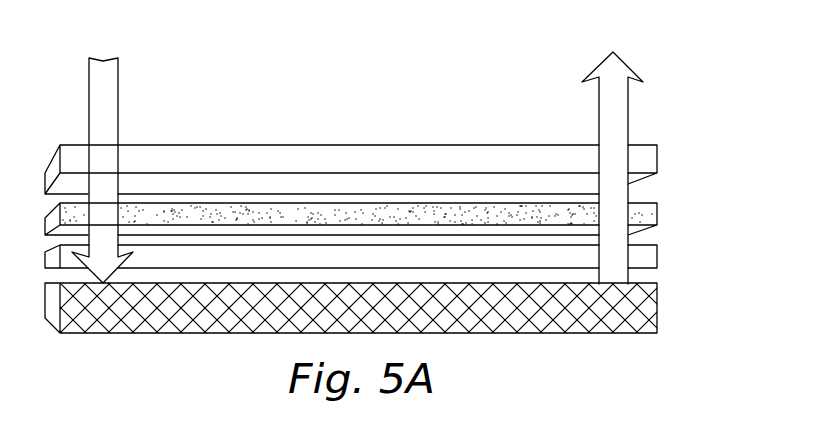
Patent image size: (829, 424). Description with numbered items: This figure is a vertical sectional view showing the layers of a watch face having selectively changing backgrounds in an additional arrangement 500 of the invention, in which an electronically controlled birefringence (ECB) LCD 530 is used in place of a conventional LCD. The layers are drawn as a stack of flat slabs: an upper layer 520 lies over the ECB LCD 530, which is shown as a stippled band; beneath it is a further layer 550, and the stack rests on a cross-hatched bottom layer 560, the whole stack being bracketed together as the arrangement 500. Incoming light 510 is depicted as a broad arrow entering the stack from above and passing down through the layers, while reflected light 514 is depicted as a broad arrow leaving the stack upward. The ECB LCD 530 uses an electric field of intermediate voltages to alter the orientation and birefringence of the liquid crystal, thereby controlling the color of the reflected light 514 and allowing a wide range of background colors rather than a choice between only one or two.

The additional arrangement 500 is at (369, 241).
The incoming light 510 is at (102, 150).
The reflected light 514 is at (612, 151).
The top layer 520 is at (377, 172).
The electronically controlled birefringence (ECB) LCD 530 is at (374, 225).
The intermediate layer 550 is at (375, 268).
The substrate layer 560 is at (375, 317).